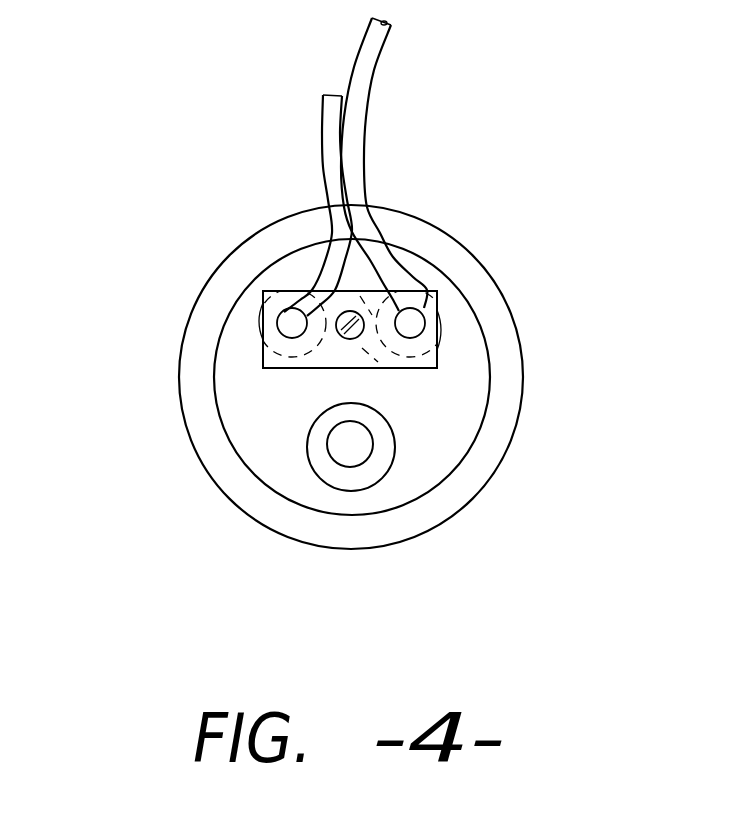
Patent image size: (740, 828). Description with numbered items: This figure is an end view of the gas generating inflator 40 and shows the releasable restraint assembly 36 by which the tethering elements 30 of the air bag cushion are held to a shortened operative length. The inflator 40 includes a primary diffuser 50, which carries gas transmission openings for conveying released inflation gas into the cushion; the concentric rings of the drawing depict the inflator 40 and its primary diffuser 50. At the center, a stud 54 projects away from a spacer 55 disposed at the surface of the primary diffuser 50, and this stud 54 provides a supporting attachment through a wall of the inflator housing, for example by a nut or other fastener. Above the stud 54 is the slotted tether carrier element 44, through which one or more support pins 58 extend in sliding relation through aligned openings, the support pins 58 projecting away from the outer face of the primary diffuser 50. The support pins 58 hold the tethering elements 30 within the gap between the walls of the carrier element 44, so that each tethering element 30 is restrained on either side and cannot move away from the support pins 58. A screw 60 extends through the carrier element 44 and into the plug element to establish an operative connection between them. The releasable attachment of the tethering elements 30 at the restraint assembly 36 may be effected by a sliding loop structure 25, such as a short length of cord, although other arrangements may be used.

The tethering element 30 is at (377, 61).
The releasable restraint assembly 36 is at (379, 283).
The screw 60 is at (345, 315).
The support pin 58 is at (284, 313).
The carrier element 44 is at (262, 350).
The sliding loop structure 25 is at (441, 331).
The gas generating inflator 40 is at (242, 512).
The primary diffuser 50 is at (405, 505).
The spacer 55 is at (335, 490).
The stud 54 is at (357, 457).